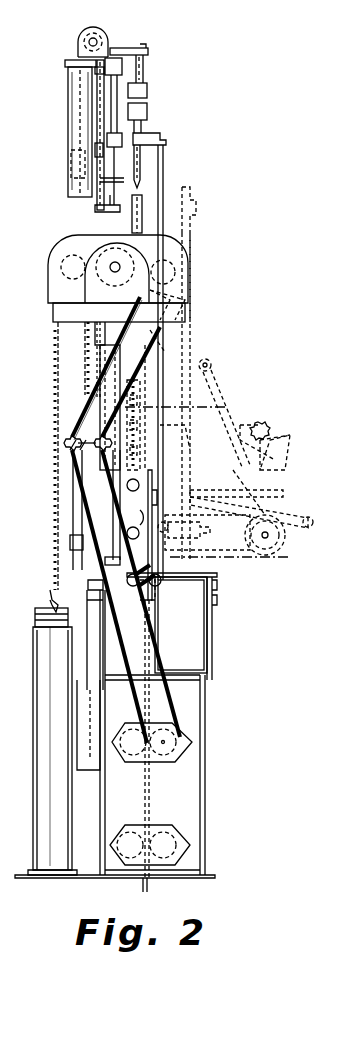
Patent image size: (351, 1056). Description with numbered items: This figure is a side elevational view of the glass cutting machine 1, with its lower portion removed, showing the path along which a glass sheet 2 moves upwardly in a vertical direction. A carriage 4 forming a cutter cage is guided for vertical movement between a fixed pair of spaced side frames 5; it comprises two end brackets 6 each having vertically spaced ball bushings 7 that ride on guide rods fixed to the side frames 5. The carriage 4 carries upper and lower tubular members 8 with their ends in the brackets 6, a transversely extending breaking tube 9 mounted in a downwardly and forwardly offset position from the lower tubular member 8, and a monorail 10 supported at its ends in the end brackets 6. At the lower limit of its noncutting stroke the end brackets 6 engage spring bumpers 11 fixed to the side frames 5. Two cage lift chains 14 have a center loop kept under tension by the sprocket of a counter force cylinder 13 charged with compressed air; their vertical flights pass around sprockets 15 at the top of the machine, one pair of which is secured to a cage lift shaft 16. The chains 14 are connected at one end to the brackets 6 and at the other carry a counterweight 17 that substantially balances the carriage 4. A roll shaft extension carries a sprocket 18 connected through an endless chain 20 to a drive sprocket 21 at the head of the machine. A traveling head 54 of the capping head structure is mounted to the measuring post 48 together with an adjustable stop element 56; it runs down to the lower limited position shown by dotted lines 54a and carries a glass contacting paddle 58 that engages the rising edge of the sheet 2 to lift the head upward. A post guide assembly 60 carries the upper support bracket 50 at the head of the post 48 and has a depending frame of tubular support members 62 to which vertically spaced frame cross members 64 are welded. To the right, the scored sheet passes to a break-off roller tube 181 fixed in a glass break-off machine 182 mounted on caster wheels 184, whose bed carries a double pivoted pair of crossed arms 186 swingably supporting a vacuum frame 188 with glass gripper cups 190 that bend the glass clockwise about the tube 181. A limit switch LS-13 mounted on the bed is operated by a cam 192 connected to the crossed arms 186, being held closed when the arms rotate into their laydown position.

The glass cutting machine 1 is at (58, 248).
The glass sheet 2 is at (138, 435).
The carriage 4 is at (152, 472).
The side frames 5 is at (88, 393).
The end brackets 6 is at (148, 575).
The ball bushings 7 is at (117, 487).
The tubular members 8 is at (139, 485).
The breaking tube 9 is at (172, 626).
The monorail 10 is at (139, 535).
The spring bumpers 11 is at (95, 583).
The counter force cylinder 13 is at (80, 485).
The cage lift chains 14 is at (57, 341).
The sprockets 15 is at (40, 250).
The cage lift shaft 16 is at (113, 263).
The counterweight 17 is at (42, 612).
The sprocket 18 is at (153, 757).
The endless chain 20 is at (165, 348).
The drive sprocket 21 is at (232, 288).
The measuring post 48 is at (140, 166).
The upper support bracket 50 is at (135, 48).
The traveling head 54 is at (142, 125).
The lower limited position 54a is at (196, 400).
The adjustable stop element 56 is at (147, 88).
The glass contacting paddle 58 is at (160, 137).
The post guide assembly 60 is at (68, 125).
The tubular support members 62 is at (95, 207).
The frame cross members 64 is at (95, 70).
The break-off roller tube 181 is at (204, 532).
The glass break-off machine 182 is at (325, 471).
The caster wheels 184 is at (285, 548).
The crossed arms 186 is at (215, 378).
The vacuum frame 188 is at (196, 238).
The glass gripper cups 190 is at (170, 335).
The cam 192 is at (265, 425).
The limit switch LS-13 is at (305, 438).